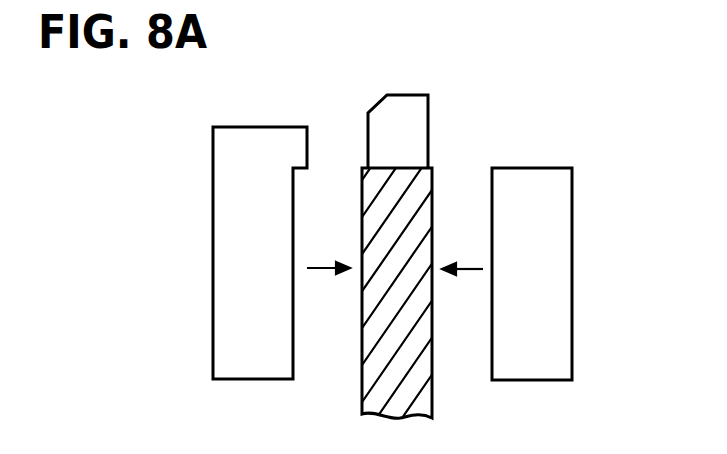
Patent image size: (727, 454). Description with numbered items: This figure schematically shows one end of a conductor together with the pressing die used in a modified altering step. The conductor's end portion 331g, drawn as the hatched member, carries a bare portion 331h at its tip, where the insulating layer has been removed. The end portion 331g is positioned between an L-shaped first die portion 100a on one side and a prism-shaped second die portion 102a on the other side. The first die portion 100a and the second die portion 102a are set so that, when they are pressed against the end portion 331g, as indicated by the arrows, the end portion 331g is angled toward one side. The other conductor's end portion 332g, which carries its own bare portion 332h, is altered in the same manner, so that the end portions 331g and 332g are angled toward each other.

The first die portion 100a is at (253, 365).
The second die portion 102a is at (532, 366).
The bare portion 331h is at (500, 131).
The bare portion 332h is at (405, 123).
The end portion 331g is at (460, 292).
The end portion 332g is at (420, 200).